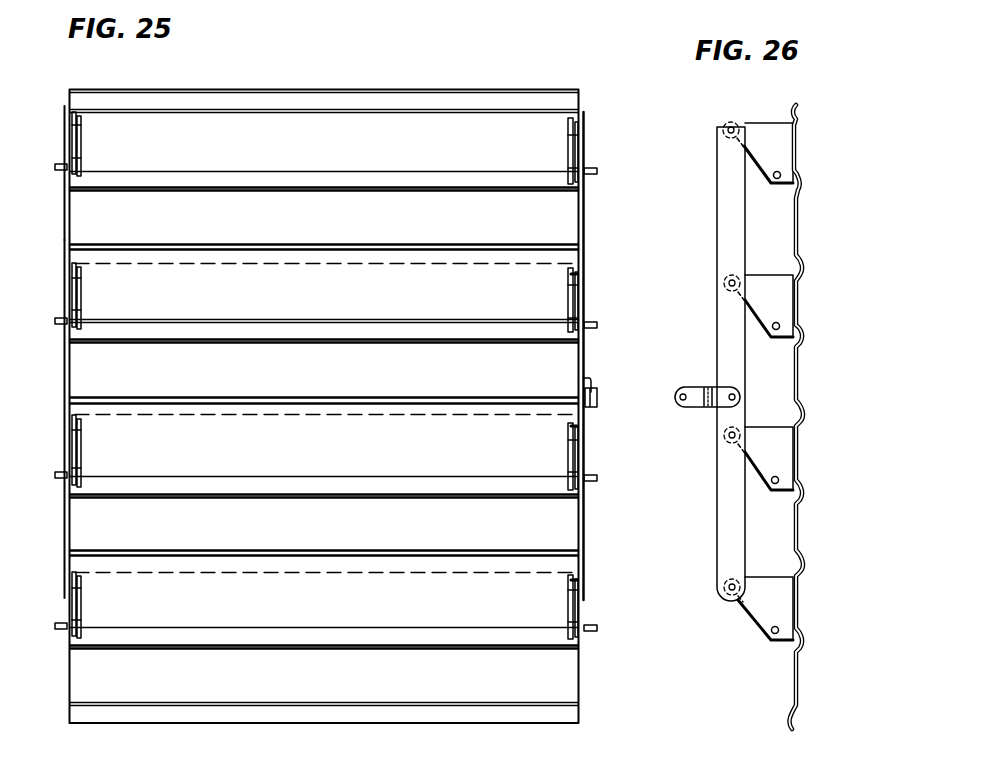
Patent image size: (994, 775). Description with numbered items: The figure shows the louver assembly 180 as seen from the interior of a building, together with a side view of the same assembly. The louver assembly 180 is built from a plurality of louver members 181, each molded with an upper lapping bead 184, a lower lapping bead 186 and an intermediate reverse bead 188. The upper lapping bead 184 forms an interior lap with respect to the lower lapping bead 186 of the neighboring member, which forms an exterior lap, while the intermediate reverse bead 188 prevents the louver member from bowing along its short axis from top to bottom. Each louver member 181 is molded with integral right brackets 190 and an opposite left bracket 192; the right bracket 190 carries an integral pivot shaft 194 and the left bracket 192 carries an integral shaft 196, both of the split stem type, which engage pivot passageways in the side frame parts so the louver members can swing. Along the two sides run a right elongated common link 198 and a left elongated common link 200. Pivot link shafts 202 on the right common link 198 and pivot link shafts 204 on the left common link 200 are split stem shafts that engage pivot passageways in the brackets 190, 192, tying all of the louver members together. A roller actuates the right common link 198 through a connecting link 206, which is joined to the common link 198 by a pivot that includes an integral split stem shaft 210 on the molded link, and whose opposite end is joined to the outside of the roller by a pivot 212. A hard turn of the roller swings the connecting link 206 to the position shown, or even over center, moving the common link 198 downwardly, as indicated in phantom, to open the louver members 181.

In FIG. 25, the louver assembly 180 is at (439, 80).
In FIG. 25, the louver member 181 is at (346, 132).
In FIG. 25, the upper lapping bead 184 is at (527, 100).
In FIG. 26, the upper lapping bead 184 is at (798, 420).
In FIG. 25, the lower lapping bead 186 is at (257, 262).
In FIG. 26, the lower lapping bead 186 is at (804, 410).
In FIG. 25, the intermediate reverse bead 188 is at (463, 176).
In FIG. 26, the intermediate reverse bead 188 is at (802, 645).
In FIG. 25, the right bracket 190 is at (584, 148).
In FIG. 26, the right bracket 190 is at (764, 128).
In FIG. 25, the left bracket 192 is at (70, 142).
In FIG. 25, the pivot shaft 194 is at (594, 174).
In FIG. 26, the pivot shaft 194 is at (780, 326).
In FIG. 25, the shaft 196 is at (56, 168).
In FIG. 25, the right elongated common link 198 is at (609, 356).
In FIG. 26, the right elongated common link 198 is at (727, 507).
In FIG. 25, the left elongated common link 200 is at (64, 374).
In FIG. 25, the pivot link shaft 202 is at (576, 282).
In FIG. 26, the pivot link shaft 202 is at (727, 126).
In FIG. 25, the pivot link shaft 204 is at (80, 124).
In FIG. 25, the connecting link 206 is at (583, 378).
In FIG. 26, the connecting link 206 is at (702, 408).
In FIG. 25, the split stem shaft 210 is at (597, 402).
In FIG. 26, the pivot 212 is at (697, 375).